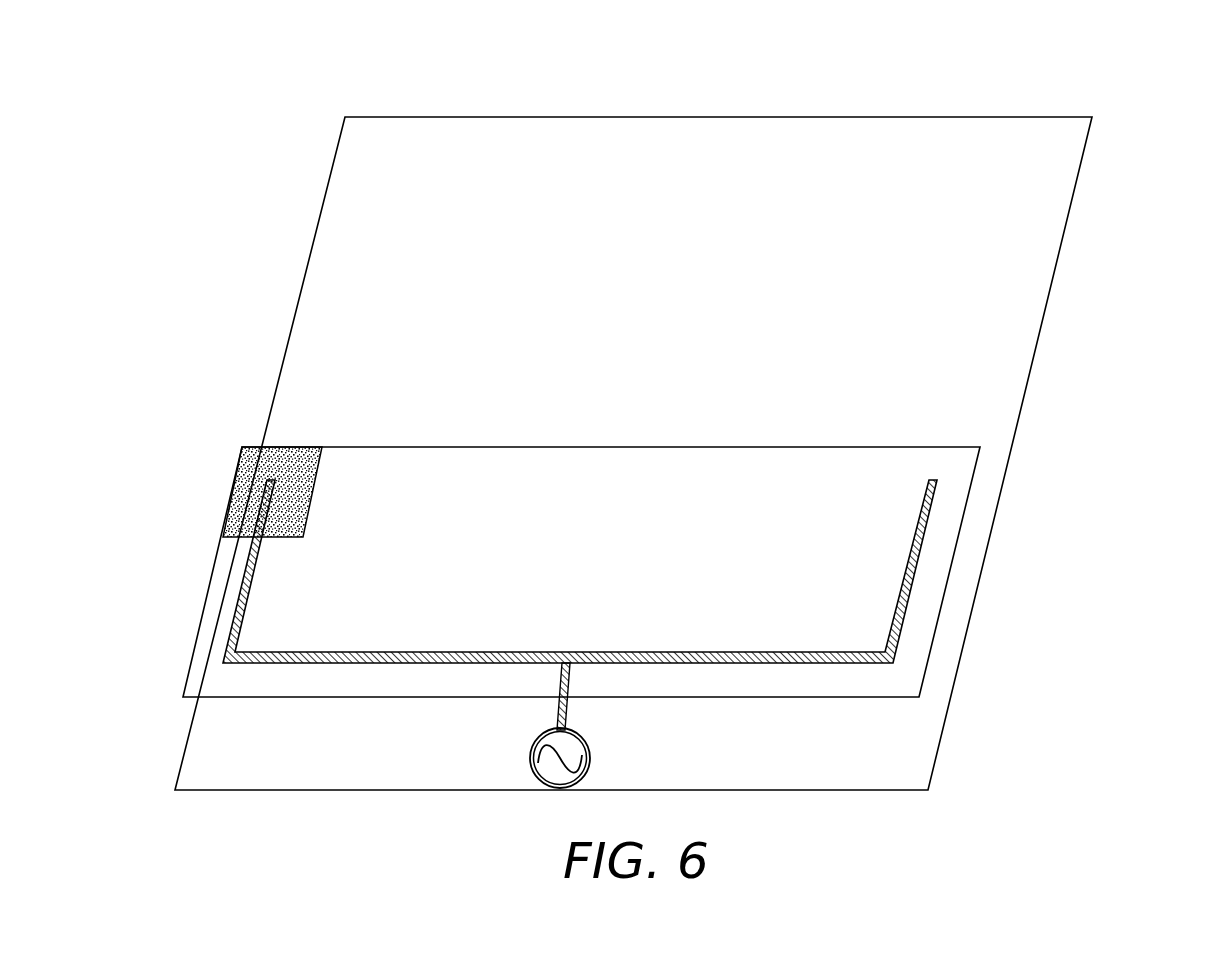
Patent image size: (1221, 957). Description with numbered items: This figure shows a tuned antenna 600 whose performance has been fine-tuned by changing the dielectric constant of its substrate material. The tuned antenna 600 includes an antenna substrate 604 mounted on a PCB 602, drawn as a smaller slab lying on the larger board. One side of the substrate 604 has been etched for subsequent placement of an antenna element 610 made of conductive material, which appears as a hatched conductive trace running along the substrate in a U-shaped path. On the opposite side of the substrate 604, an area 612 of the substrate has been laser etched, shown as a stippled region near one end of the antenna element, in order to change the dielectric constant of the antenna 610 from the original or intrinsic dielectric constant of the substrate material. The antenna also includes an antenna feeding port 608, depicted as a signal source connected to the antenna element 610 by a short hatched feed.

The tuned antenna 600 is at (1120, 86).
The PCB 602 is at (323, 197).
The antenna substrate 604 is at (217, 555).
The antenna feeding port 608 is at (542, 737).
The antenna element 610 is at (238, 597).
The laser etched area 612 is at (233, 493).